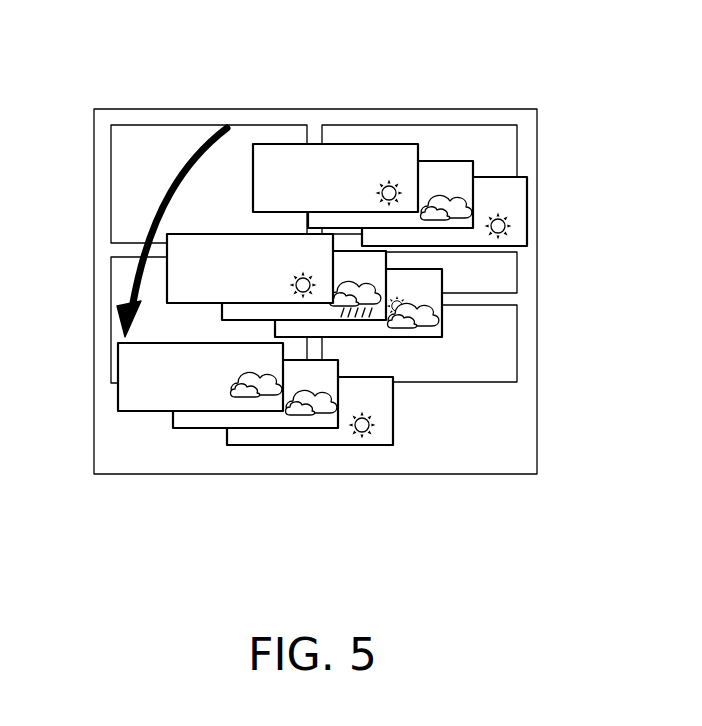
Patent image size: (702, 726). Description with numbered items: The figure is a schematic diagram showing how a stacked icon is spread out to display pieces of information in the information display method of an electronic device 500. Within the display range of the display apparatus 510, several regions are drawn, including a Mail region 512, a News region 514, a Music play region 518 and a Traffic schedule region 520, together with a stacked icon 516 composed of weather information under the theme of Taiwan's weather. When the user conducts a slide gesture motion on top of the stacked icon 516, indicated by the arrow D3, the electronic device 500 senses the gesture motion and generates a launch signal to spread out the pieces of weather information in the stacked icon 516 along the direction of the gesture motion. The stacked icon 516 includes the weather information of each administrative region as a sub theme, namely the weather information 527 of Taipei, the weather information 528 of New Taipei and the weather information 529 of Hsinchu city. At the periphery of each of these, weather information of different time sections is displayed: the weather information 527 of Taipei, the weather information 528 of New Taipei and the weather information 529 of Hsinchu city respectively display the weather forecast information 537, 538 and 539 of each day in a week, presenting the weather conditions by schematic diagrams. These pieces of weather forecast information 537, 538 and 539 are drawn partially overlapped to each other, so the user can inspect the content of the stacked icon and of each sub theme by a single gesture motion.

The electronic device 500 is at (594, 518).
The display apparatus 510 is at (538, 128).
The mail region 512 is at (112, 184).
The news region 514 is at (112, 320).
The stacked icon 516 is at (518, 167).
The music play region 518 is at (518, 258).
The traffic schedule region 520 is at (518, 345).
The weather information of Taipei 527 is at (390, 133).
The weather forecast information 537 is at (510, 58).
The weather information of New Taipei 528 is at (429, 286).
The weather forecast information 538 is at (333, 277).
The weather information of Hsinchu city 529 is at (255, 464).
The weather forecast information 539 is at (274, 540).
The arrow D3 is at (130, 280).